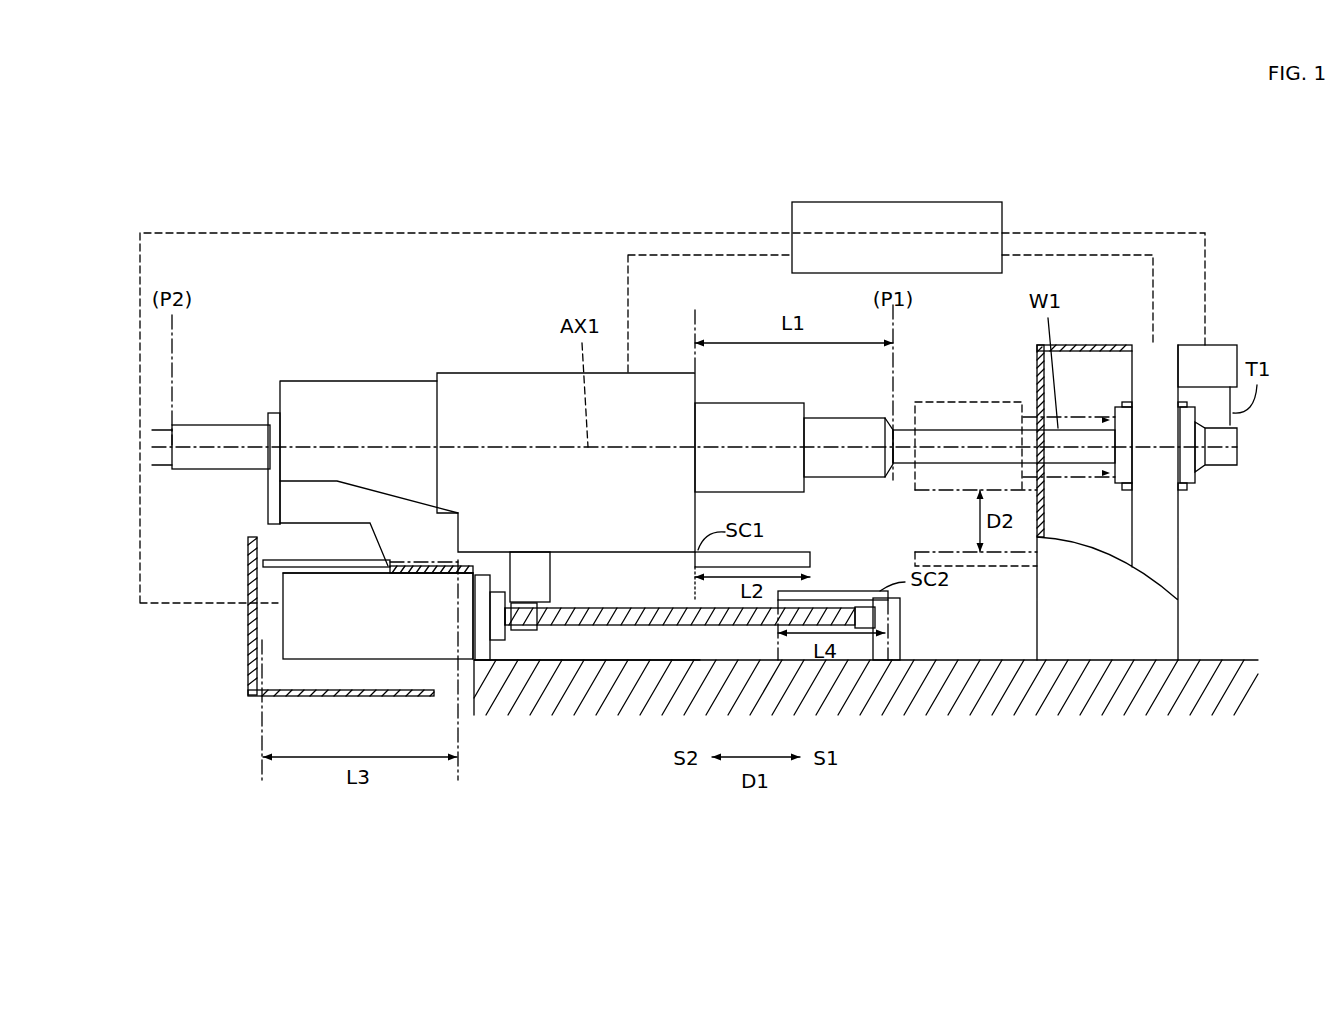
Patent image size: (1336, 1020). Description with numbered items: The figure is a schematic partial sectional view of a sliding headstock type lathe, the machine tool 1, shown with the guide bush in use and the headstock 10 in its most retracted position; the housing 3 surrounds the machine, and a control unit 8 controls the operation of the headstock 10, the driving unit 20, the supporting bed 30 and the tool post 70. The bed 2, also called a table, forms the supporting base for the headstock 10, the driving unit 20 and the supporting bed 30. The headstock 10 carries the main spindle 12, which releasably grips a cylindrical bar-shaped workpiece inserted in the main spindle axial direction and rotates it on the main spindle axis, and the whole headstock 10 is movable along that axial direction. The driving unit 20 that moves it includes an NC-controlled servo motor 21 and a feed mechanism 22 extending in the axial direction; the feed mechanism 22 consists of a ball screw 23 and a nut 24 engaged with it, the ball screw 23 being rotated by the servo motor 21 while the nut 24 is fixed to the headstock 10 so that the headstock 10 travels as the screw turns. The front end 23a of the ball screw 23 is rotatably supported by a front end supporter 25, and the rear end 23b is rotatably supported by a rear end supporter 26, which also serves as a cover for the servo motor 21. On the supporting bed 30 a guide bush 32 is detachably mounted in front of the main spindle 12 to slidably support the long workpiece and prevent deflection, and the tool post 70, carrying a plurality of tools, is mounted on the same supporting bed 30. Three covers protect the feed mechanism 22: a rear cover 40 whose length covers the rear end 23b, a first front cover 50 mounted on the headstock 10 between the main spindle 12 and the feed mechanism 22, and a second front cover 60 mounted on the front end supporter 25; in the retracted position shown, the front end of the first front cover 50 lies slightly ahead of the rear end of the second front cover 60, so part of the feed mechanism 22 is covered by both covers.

The machine tool 1 is at (207, 205).
The bed 2 is at (955, 660).
The housing 3 is at (250, 562).
The control unit 8 is at (890, 287).
The headstock 10 is at (483, 412).
The main spindle 12 is at (872, 478).
The driving unit 20 is at (380, 640).
The servo motor 21 is at (318, 617).
The feed mechanism 22 is at (598, 645).
The ball screw 23 is at (617, 607).
The front end 23a is at (857, 607).
The rear end 23b is at (503, 630).
The nut 24 is at (521, 632).
The front end supporter 25 is at (903, 612).
The rear end supporter 26 is at (483, 647).
The supporting bed 30 is at (1180, 563).
The guide bush 32 is at (1115, 410).
The rear cover 40 is at (278, 557).
The first front cover 50 is at (800, 552).
The second front cover 60 is at (875, 591).
The tool post 70 is at (1225, 345).